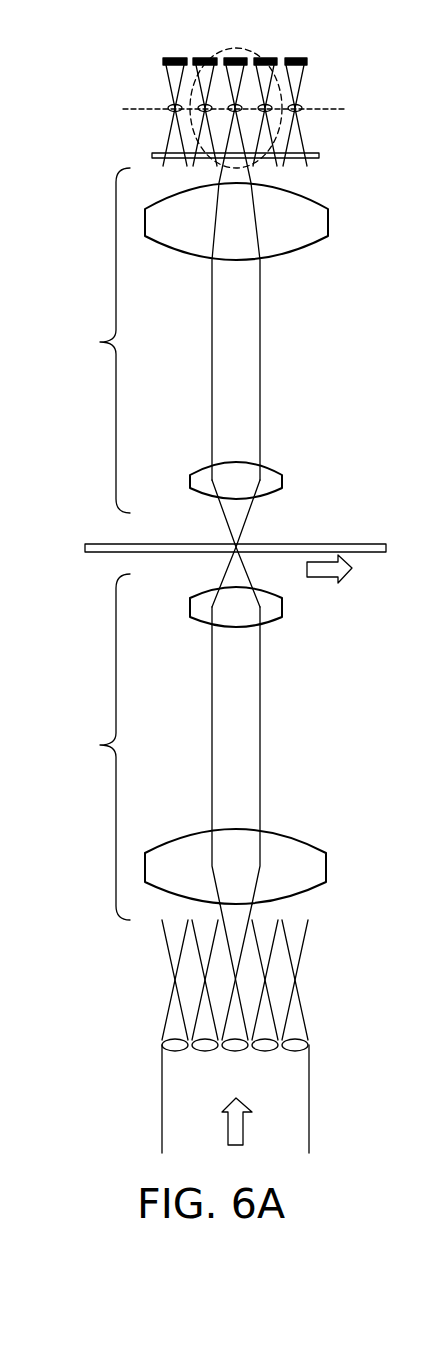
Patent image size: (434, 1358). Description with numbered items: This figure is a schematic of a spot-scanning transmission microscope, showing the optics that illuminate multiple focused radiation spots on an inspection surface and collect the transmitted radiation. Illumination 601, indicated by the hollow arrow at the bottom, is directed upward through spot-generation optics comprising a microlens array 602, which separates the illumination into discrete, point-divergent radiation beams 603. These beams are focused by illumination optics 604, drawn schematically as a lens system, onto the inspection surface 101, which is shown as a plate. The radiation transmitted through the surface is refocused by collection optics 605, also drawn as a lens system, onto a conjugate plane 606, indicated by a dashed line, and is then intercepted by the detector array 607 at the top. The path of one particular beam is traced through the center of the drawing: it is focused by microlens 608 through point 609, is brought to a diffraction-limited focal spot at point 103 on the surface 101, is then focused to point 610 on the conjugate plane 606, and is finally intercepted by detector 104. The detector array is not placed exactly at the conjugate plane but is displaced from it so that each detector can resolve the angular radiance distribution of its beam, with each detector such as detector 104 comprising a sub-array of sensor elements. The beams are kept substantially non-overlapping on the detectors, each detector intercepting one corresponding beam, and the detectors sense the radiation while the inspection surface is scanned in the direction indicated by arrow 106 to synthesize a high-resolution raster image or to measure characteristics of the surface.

The inspection surface 101 is at (118, 545).
The point 103 is at (242, 541).
The detector 104 is at (238, 66).
The direction of substrate motion 106 is at (350, 575).
The illumination 601 is at (229, 1097).
The microlens array 602 is at (222, 1023).
The point-divergent radiation beams 603 is at (154, 982).
The illumination optics 604 is at (191, 747).
The collection optics 605 is at (192, 340).
The conjugate plane 606 is at (135, 115).
The detector array 607 is at (141, 63).
The microlens 608 is at (238, 1040).
The point 609 is at (238, 983).
The point 610 is at (238, 112).